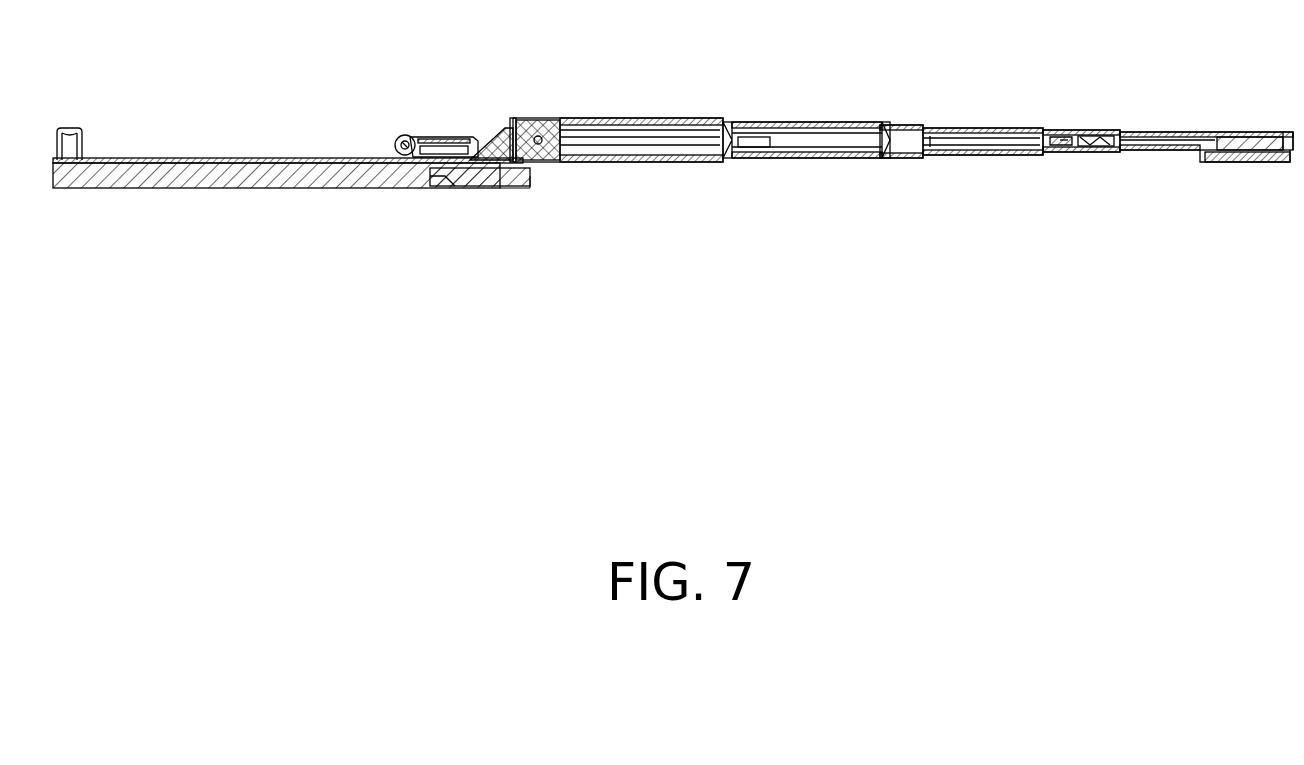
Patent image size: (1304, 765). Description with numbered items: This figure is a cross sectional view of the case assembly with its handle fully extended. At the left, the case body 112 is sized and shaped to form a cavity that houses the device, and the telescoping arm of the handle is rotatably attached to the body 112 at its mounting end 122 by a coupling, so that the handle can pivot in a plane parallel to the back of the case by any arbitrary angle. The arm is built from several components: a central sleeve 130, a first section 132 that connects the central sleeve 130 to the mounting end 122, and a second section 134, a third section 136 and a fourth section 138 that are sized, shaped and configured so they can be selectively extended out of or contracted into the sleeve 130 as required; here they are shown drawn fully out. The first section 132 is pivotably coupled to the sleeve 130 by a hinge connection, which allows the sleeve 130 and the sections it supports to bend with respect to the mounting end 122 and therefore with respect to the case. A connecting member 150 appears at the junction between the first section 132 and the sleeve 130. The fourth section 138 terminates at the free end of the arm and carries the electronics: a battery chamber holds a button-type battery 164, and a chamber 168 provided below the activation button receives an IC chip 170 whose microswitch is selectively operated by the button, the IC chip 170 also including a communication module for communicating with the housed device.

The body 112 is at (1083, 131).
The mounting end 122 is at (1291, 131).
The central sleeve 130 is at (617, 118).
The first section 132 is at (500, 128).
The second section 134 is at (808, 122).
The third section 136 is at (953, 127).
The fourth section 138 is at (1130, 152).
The collar 150 is at (538, 120).
The button-type battery 164 is at (1232, 162).
The chamber 168 is at (1072, 152).
The IC chip 170 is at (1105, 152).